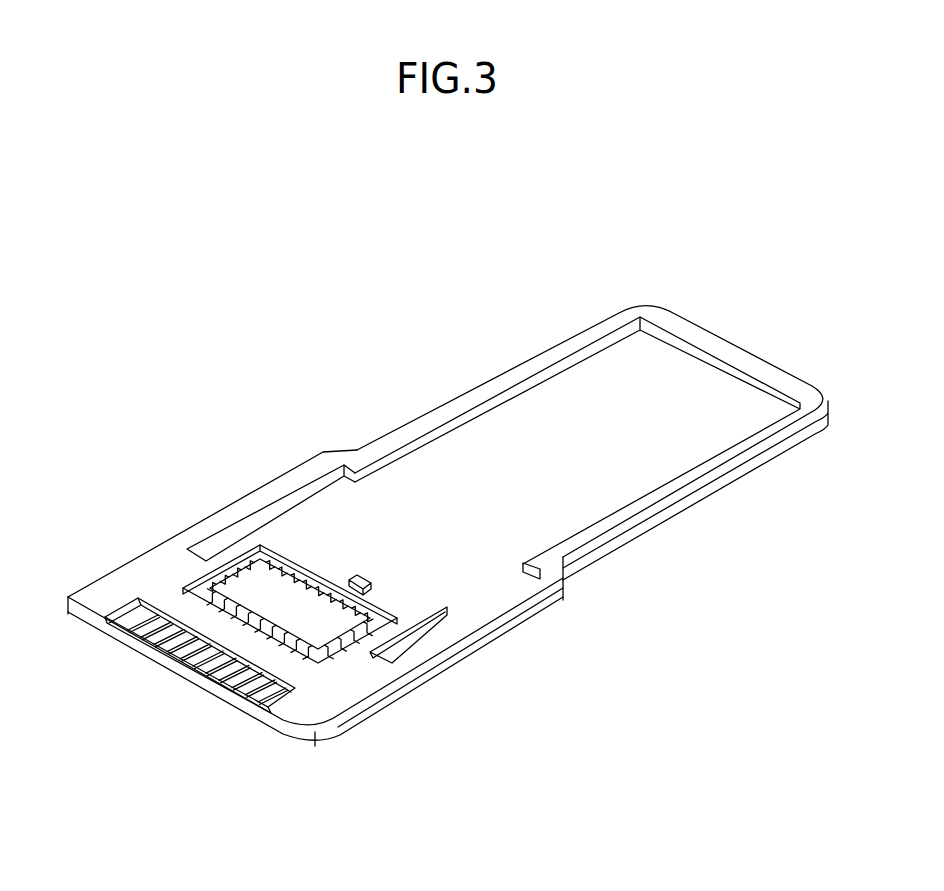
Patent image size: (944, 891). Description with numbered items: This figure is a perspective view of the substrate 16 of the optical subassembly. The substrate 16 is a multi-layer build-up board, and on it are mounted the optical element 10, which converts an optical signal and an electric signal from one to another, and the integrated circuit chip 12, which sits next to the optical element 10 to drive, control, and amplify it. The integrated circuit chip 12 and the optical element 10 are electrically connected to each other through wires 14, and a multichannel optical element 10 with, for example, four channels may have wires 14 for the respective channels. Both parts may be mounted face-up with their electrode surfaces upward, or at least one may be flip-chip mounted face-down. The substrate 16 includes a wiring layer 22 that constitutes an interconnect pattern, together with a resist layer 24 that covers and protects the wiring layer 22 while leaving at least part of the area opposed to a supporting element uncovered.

The optical element 10 is at (357, 582).
The integrated circuit chip 12 is at (322, 628).
The wires 14 is at (296, 554).
The substrate 16 is at (528, 346).
The wiring layer 22 is at (257, 693).
The resist layer 24 is at (395, 675).